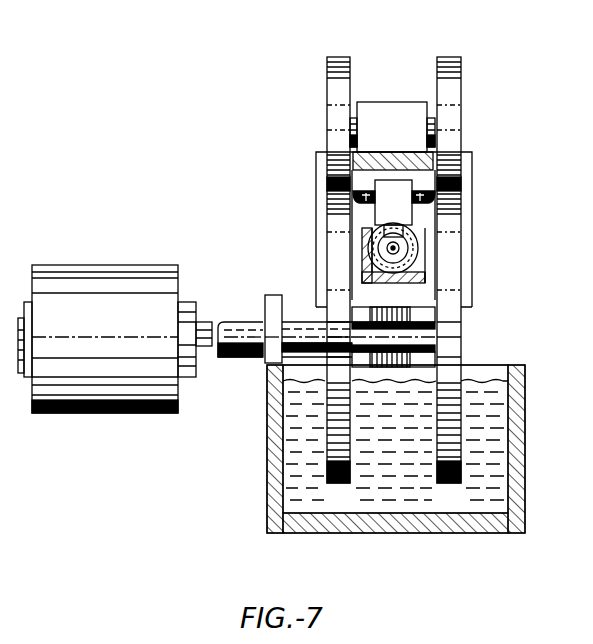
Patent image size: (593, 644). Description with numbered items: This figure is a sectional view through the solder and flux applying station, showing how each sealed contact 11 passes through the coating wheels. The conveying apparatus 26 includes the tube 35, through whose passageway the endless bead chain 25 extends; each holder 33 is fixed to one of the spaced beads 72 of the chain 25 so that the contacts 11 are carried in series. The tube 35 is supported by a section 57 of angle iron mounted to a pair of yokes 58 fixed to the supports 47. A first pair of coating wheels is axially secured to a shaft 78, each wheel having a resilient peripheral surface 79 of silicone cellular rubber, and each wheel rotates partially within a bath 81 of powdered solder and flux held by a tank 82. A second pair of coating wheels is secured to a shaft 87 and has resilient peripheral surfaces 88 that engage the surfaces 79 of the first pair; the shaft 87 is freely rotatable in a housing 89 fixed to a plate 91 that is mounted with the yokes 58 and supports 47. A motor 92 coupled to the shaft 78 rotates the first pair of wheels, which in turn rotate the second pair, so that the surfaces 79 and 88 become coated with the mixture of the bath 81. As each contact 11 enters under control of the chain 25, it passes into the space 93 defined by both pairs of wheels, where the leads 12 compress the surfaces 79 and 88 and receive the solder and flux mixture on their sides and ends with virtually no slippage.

The sealed contact 11 is at (463, 173).
The leads 12 is at (323, 192).
The bead chain 25 is at (362, 237).
The conveying apparatus 26 is at (419, 228).
The holder 33 is at (372, 220).
The tube 35 is at (396, 249).
The supports 47 is at (415, 316).
The section of angle iron 57 is at (375, 266).
The yokes 58 is at (470, 300).
The beads 72 is at (405, 258).
The shaft 78 is at (310, 320).
The resilient peripheral surface 79 is at (330, 430).
The bath 81 is at (490, 381).
The tank 82 is at (525, 443).
The shaft 87 is at (432, 118).
The resilient peripheral surfaces 88 is at (338, 57).
The housing 89 is at (397, 102).
The plate 91 is at (433, 158).
The motor 92 is at (157, 265).
The space 93 is at (383, 162).